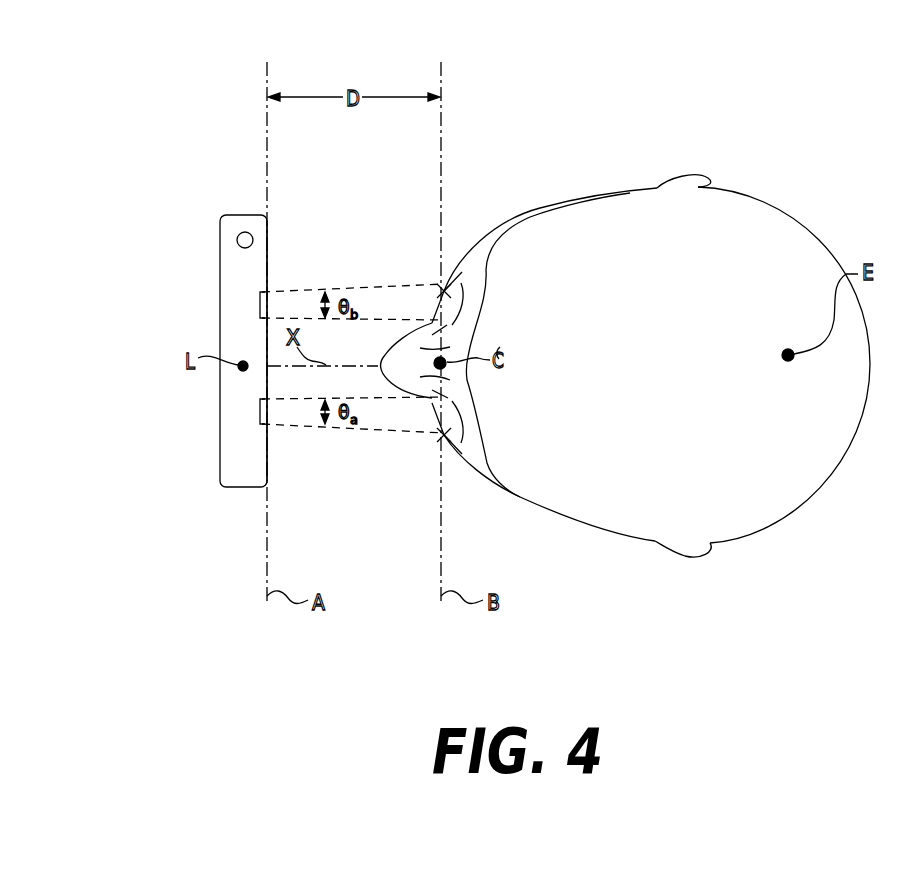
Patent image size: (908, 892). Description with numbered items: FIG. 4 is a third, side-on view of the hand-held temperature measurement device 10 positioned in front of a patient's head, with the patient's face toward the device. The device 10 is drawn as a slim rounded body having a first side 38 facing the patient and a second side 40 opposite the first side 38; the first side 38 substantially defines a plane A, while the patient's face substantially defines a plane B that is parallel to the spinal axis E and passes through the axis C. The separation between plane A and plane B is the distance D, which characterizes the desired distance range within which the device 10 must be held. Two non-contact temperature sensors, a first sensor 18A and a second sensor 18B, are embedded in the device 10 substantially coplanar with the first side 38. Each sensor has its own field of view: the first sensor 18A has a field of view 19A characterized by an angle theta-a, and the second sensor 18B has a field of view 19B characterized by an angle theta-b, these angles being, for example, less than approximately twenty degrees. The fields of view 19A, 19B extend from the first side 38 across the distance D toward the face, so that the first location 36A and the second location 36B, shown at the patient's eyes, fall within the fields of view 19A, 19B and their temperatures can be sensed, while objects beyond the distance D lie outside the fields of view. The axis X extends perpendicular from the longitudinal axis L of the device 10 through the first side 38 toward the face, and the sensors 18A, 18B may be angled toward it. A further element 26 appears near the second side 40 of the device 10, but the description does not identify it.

The temperature measurement device 10 is at (209, 516).
The first sensor 18A is at (258, 410).
The second sensor 18B is at (258, 309).
The field of view of first sensor 19A is at (395, 413).
The field of view of second sensor 19B is at (397, 302).
The camera aperture 26 is at (232, 236).
The first location 36A is at (443, 436).
The second location 36B is at (443, 289).
The first side 38 is at (267, 470).
The second side 40 is at (220, 462).